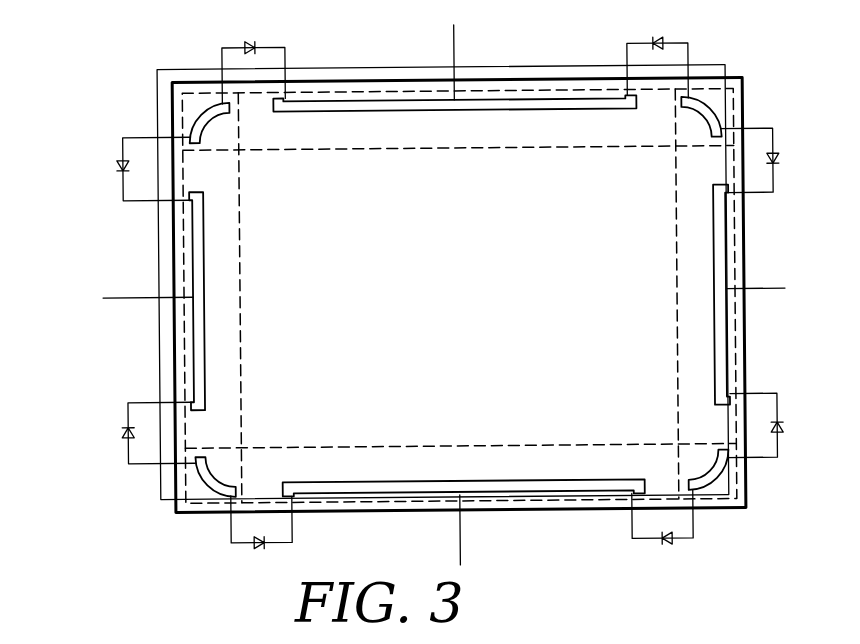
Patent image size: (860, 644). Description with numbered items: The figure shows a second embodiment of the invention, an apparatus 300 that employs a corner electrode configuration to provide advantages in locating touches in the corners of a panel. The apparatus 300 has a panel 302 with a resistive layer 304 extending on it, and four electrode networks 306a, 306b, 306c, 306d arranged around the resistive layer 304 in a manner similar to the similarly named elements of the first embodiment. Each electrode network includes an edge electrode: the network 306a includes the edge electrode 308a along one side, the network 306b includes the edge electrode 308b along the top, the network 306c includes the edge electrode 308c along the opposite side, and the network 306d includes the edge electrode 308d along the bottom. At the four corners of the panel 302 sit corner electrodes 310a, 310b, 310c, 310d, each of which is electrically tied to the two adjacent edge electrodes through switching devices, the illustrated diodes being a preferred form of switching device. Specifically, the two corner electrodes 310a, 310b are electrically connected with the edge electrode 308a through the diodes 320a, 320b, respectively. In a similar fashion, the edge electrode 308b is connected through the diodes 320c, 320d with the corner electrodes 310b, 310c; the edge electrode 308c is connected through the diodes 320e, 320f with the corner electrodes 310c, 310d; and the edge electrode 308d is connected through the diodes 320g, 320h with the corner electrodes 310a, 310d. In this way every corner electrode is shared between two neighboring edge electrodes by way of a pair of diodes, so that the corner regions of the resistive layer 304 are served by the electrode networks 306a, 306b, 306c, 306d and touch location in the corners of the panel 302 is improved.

The apparatus 300 is at (135, 75).
The panel 302 is at (193, 67).
The resistive layer 304 is at (470, 282).
The electrode network 306a is at (218, 262).
The electrode network 306b is at (480, 150).
The electrode network 306c is at (688, 236).
The electrode network 306d is at (400, 446).
The edge electrode 308a is at (197, 333).
The edge electrode 308b is at (420, 111).
The edge electrode 308c is at (716, 275).
The edge electrode 308d is at (480, 480).
The corner electrode 310a is at (215, 480).
The corner electrode 310b is at (208, 120).
The corner electrode 310c is at (702, 118).
The corner electrode 310d is at (715, 472).
The diode 320a is at (122, 433).
The diode 320b is at (118, 165).
The diode 320c is at (253, 41).
The diode 320d is at (660, 40).
The diode 320e is at (780, 157).
The diode 320f is at (780, 430).
The diode 320g is at (668, 543).
The diode 320h is at (250, 547).